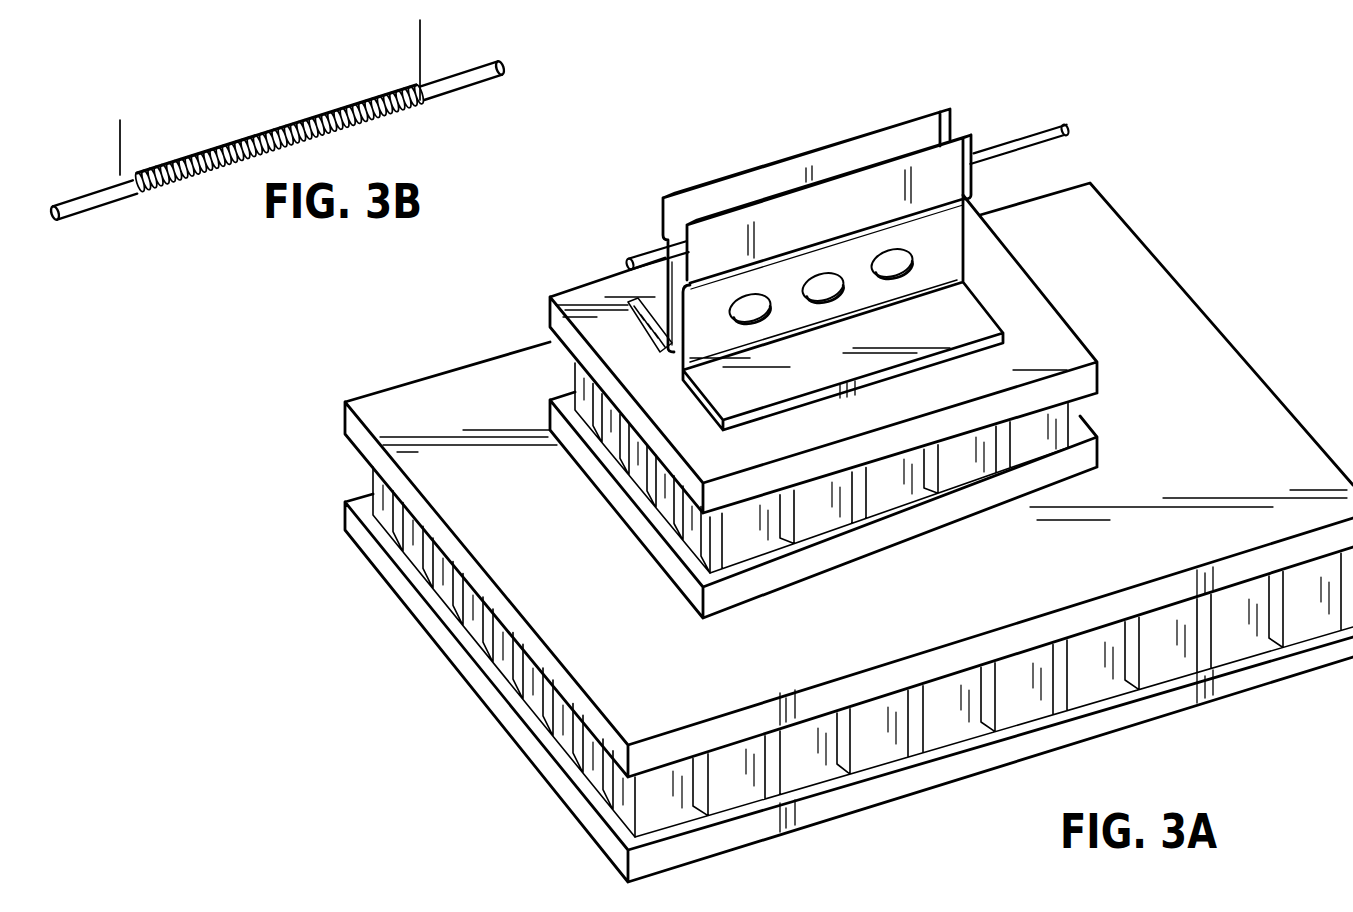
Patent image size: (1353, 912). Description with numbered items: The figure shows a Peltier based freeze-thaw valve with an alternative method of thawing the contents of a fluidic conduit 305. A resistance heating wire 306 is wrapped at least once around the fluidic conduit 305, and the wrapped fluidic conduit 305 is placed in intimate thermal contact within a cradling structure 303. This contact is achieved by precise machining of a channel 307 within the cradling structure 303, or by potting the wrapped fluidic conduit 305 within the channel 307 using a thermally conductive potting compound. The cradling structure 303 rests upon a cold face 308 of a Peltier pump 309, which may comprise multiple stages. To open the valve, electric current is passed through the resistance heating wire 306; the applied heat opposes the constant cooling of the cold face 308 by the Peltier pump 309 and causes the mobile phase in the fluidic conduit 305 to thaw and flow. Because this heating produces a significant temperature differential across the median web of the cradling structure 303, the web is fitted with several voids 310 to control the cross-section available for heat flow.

In FIG. 3A, the cradling structure 303 is at (963, 238).
In FIG. 3B, the fluidic conduit 305 is at (480, 84).
In FIG. 3A, the fluidic conduit 305 is at (1050, 123).
In FIG. 3B, the resistance heating wire 306 is at (422, 38).
In FIG. 3A, the resistance heating wire 306 is at (907, 127).
In FIG. 3A, the channel 307 is at (693, 216).
In FIG. 3A, the cold face 308 is at (1070, 352).
In FIG. 3A, the Peltier pump 309 is at (673, 513).
In FIG. 3A, the voids 310 is at (930, 312).